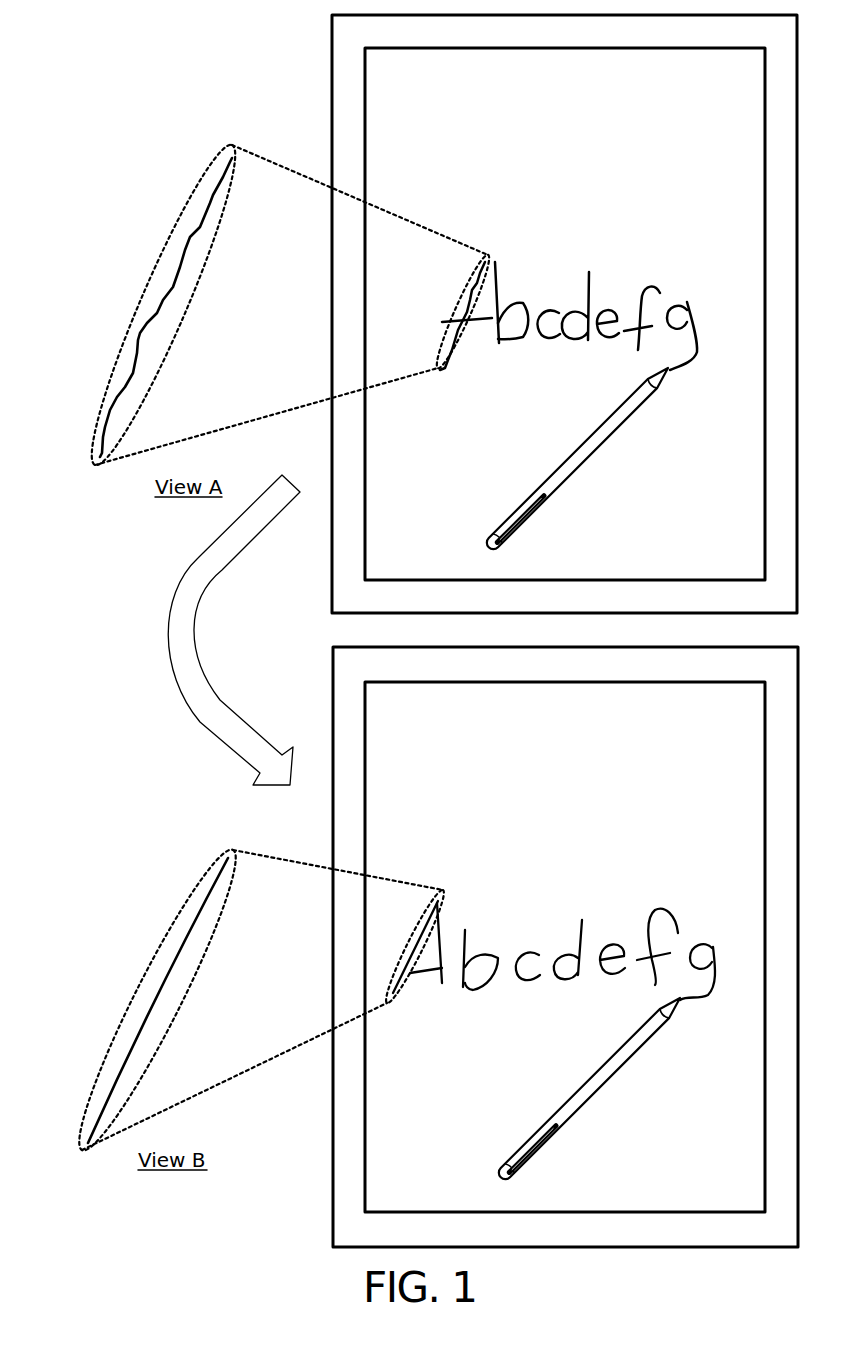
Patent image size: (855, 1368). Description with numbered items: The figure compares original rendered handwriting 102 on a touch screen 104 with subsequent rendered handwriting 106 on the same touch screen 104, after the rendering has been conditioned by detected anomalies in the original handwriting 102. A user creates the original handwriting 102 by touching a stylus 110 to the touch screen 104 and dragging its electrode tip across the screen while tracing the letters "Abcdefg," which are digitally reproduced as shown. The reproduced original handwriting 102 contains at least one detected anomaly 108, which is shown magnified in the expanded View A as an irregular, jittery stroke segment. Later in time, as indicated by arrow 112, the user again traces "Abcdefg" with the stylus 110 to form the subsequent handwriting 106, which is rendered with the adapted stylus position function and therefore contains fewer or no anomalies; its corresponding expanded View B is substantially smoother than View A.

The original rendered handwriting 102 is at (568, 270).
The touch screen 104 is at (745, 83).
The subsequent rendered handwriting 106 is at (548, 908).
The anomaly 108 is at (126, 327).
The stylus 110 is at (597, 448).
The arrow 112 is at (182, 692).